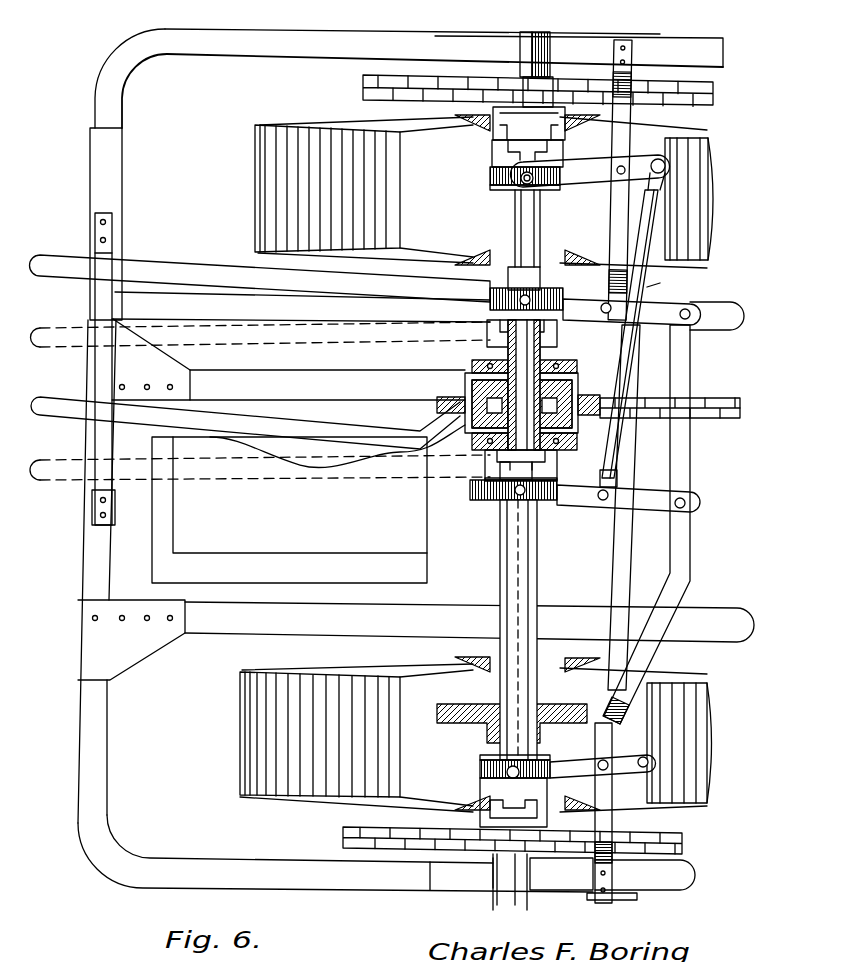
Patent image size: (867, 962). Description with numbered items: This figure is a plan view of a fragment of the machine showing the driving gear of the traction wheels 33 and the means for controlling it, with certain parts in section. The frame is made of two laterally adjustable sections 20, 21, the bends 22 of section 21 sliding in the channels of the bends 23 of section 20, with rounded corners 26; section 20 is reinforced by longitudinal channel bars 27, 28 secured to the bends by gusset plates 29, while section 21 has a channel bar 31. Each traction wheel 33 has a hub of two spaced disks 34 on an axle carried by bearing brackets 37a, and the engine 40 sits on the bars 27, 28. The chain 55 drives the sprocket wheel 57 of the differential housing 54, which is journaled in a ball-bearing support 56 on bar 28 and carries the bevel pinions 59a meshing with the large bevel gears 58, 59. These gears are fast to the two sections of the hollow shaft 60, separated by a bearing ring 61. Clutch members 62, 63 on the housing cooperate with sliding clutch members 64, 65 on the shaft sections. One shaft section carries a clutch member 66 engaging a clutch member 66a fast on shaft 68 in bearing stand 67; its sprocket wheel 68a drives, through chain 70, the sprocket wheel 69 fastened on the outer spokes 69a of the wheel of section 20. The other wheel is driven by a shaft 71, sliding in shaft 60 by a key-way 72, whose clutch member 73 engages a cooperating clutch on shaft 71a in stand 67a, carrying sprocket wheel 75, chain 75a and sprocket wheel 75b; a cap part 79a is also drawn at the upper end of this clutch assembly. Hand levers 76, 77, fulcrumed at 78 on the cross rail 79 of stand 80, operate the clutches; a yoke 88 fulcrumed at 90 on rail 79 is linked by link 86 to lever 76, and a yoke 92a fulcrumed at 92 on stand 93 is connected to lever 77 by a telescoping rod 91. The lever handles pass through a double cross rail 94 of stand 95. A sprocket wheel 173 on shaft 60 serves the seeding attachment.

The frame section 20 is at (162, 363).
The frame section 21 is at (258, 45).
The bend 22 is at (100, 117).
The bend 23 is at (85, 705).
The rounded corner 26 is at (112, 58).
The longitudinal channel bar 27 is at (238, 625).
The longitudinal channel bar 28 is at (283, 392).
The gusset plate 29 is at (168, 642).
The longitudinal channel bar 31 is at (322, 323).
The traction wheel 33 is at (258, 182).
The hub disk 34 is at (600, 170).
The bearing bracket 37a is at (623, 40).
The internal-combustion engine 40 is at (289, 510).
The differential housing 54 is at (467, 371).
The chain 55 is at (721, 420).
The ball-bearing support 56 is at (480, 365).
The sprocket wheel 57 is at (460, 389).
The bevel gear 58 is at (447, 421).
The bevel gear 59 is at (490, 452).
The bevel pinion 59a is at (582, 388).
The hollow shaft 60 is at (524, 551).
The ring 61 is at (558, 441).
The clutch member 62 is at (498, 497).
The clutch member 63 is at (557, 342).
The clutch member 64 is at (558, 503).
The clutch member 65 is at (490, 300).
The clutch member 66 is at (487, 784).
The clutch member 66a is at (500, 818).
The bearing stand 67 is at (500, 884).
The bearing stand 67a is at (523, 47).
The shaft 68 is at (512, 878).
The sprocket wheel 68a is at (523, 844).
The sprocket wheel 69 is at (352, 828).
The outer spokes 69a is at (372, 126).
The chain 70 is at (395, 858).
The shaft 71 is at (538, 221).
The shaft 71a is at (553, 74).
The key-way 72 is at (515, 216).
The clutch member 73 is at (510, 162).
The sprocket wheel 75 is at (541, 75).
The chain 75a is at (453, 80).
The sprocket wheel 75b is at (363, 88).
The hand lever 76 is at (180, 300).
The hand lever 77 is at (226, 422).
The fulcrum 78 is at (693, 327).
The cross rail 79 is at (682, 586).
The top cap 79a is at (502, 127).
The stand 80 is at (611, 881).
The link 86 is at (627, 583).
The yoke 88 is at (570, 771).
The fulcrum 90 is at (617, 772).
The rod 91 is at (650, 286).
The fulcrum 92 is at (656, 163).
The yoke 92a is at (577, 183).
The supporting stand 93 is at (620, 207).
The double cross rail 94 is at (100, 370).
The stand 95 is at (95, 508).
The sprocket wheel 173 is at (453, 704).